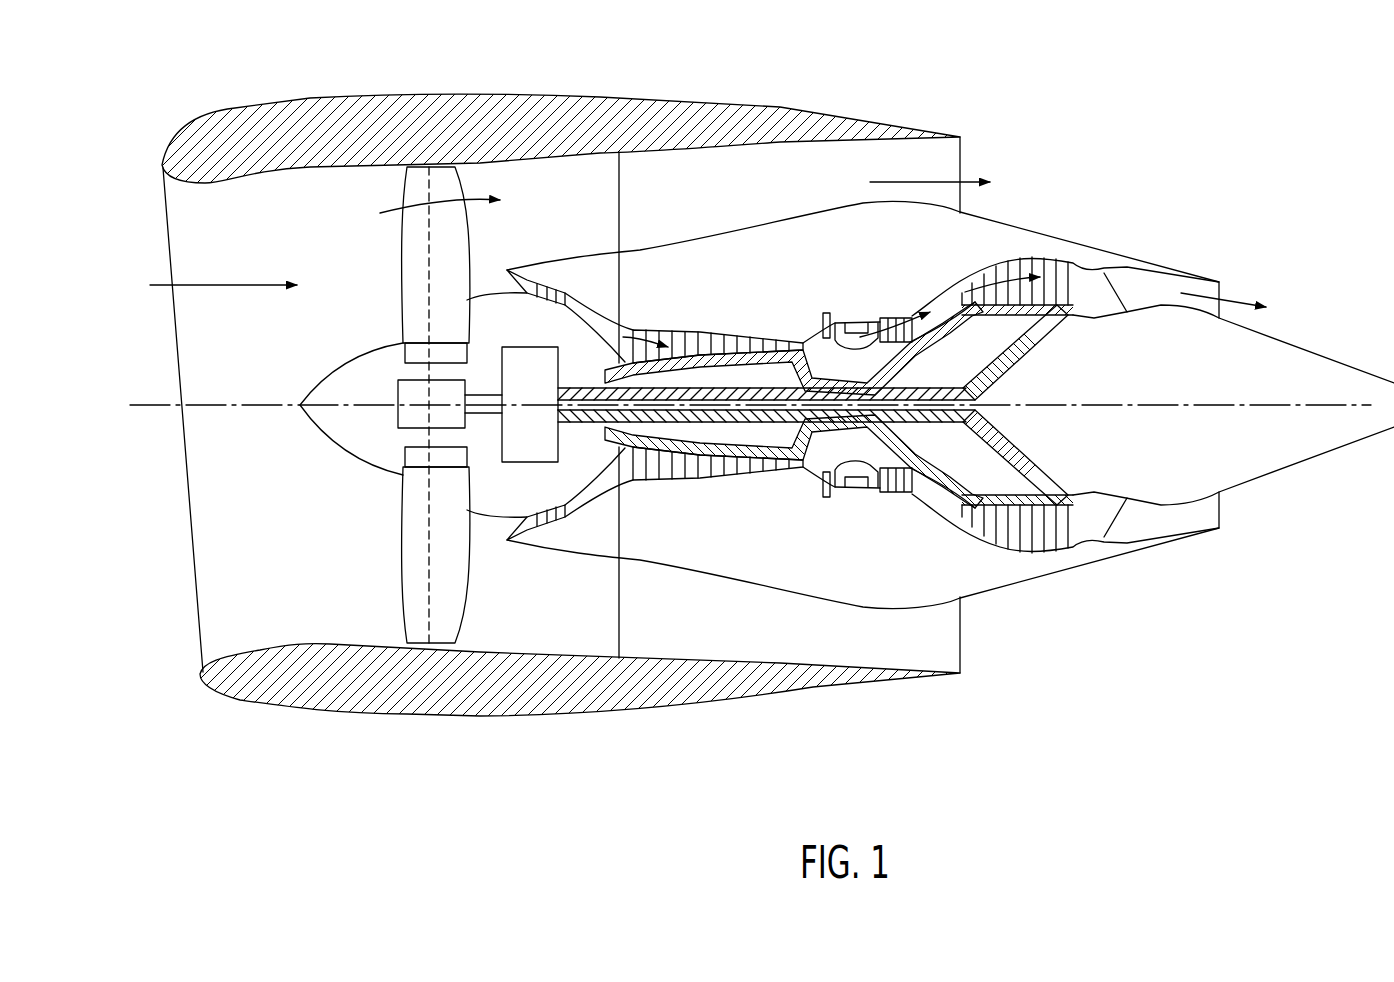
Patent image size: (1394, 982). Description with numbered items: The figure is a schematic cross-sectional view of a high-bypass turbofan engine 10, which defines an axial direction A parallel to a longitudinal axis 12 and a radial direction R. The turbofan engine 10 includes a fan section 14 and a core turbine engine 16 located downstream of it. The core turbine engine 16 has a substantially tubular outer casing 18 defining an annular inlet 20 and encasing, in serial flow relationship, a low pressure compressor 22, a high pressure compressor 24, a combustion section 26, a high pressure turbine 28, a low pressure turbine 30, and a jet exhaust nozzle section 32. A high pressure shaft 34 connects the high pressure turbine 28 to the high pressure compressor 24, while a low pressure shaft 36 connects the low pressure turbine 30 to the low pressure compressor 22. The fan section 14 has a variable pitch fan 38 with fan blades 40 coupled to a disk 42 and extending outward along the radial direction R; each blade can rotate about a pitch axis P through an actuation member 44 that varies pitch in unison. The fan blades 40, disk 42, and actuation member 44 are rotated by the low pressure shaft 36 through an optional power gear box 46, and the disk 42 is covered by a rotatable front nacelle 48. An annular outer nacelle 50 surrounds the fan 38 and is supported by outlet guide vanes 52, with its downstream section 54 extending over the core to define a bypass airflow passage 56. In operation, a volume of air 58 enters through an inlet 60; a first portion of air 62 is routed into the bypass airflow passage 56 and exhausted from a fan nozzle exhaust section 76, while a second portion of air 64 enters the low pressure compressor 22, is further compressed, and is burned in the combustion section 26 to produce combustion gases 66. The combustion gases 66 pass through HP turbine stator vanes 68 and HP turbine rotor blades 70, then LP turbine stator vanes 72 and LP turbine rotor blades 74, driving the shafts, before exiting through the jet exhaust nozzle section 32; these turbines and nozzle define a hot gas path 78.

The turbofan engine 10 is at (1128, 108).
The longitudinal axis 12 is at (1161, 405).
The fan section 14 is at (368, 183).
The core turbine engine 16 is at (776, 285).
The outer casing 18 is at (780, 593).
The annular inlet 20 is at (522, 523).
The low pressure compressor 22 is at (574, 500).
The high pressure compressor 24 is at (655, 478).
The combustion section 26 is at (847, 480).
The high pressure turbine 28 is at (917, 486).
The low pressure turbine 30 is at (1047, 547).
The jet exhaust nozzle section 32 is at (1129, 533).
The high pressure shaft 34 is at (843, 337).
The low pressure shaft 36 is at (912, 388).
The variable pitch fan 38 is at (342, 497).
The fan blades 40 is at (400, 558).
The disk 42 is at (433, 352).
The actuation member 44 is at (398, 390).
The power gear box 46 is at (543, 363).
The front nacelle 48 is at (302, 412).
The outer nacelle 50 is at (437, 713).
The outlet guide vanes 52 is at (620, 172).
The downstream section 54 is at (558, 115).
The bypass airflow passage 56 is at (811, 193).
The volume of air 58 is at (218, 283).
The inlet 60 is at (573, 693).
The first portion of air 62 is at (413, 212).
The second portion of air 64 is at (490, 283).
The combustion gases 66 is at (1047, 245).
The HP turbine stator vanes 68 is at (865, 482).
The HP turbine rotor blades 70 is at (885, 483).
The LP turbine stator vanes 72 is at (968, 523).
The LP turbine rotor blades 74 is at (983, 533).
The fan nozzle exhaust section 76 is at (952, 158).
The hot gas path 78 is at (950, 293).
The pitch axis P is at (450, 180).
The radial direction R is at (52, 245).
The axial direction A is at (780, 755).